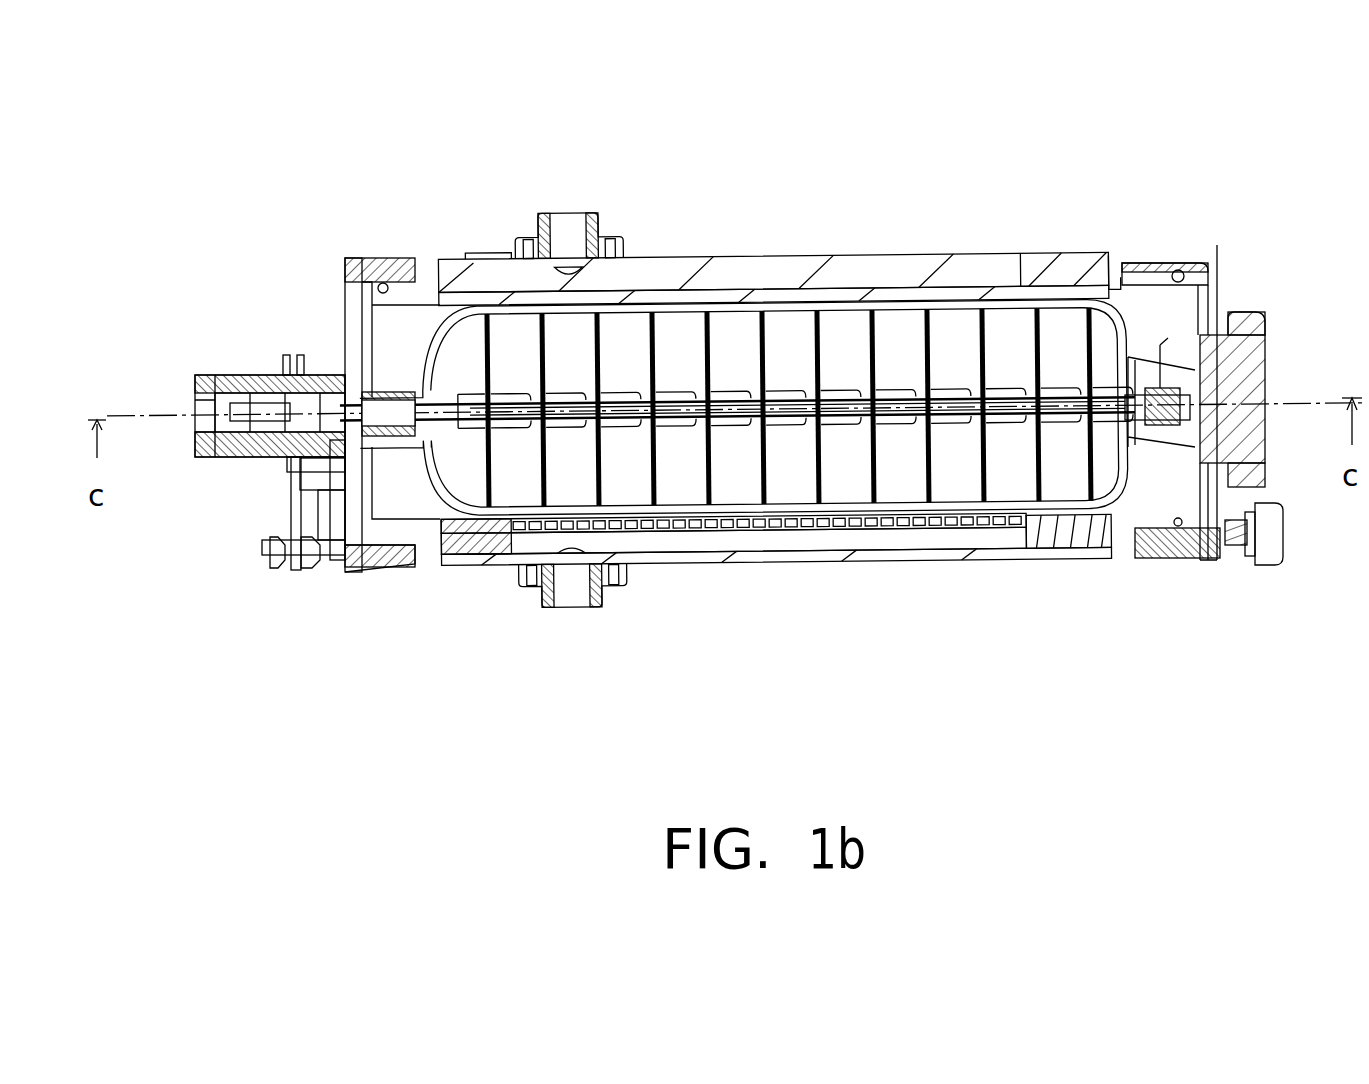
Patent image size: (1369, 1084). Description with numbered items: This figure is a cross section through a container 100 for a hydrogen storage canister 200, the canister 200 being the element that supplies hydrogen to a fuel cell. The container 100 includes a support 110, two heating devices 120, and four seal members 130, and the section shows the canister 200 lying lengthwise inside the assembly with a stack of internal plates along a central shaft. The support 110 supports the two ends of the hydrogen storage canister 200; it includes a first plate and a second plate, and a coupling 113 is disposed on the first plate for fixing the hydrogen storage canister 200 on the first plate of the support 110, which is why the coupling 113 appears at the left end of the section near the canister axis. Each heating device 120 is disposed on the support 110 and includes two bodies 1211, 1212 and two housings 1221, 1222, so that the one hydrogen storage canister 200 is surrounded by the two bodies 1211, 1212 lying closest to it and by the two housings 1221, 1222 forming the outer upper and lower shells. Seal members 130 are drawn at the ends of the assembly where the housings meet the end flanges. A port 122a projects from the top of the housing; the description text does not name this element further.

The container 100 is at (1088, 254).
The support 110 is at (380, 568).
The coupling 113 is at (220, 466).
The heating device 120 is at (705, 563).
The fluid port 122a is at (575, 236).
The housing 1221 is at (775, 260).
The housing 1222 is at (808, 563).
The body 1211 is at (905, 290).
The body 1212 is at (1064, 556).
The seal member 130 is at (385, 286).
The hydrogen storage canister 200 is at (893, 487).